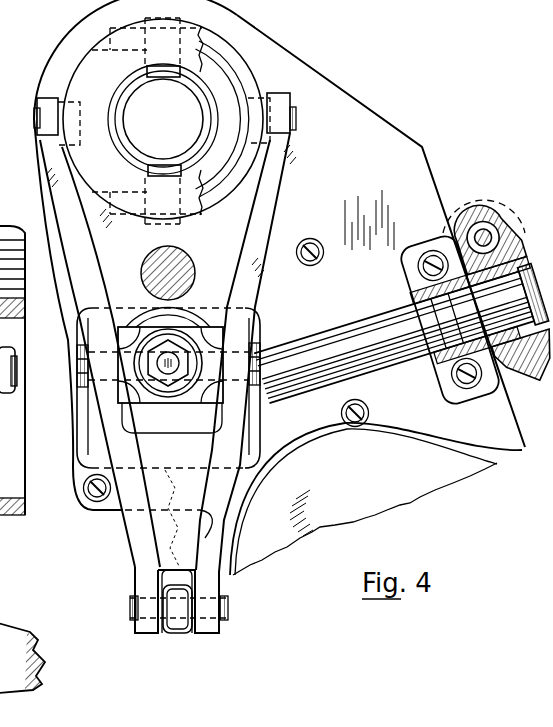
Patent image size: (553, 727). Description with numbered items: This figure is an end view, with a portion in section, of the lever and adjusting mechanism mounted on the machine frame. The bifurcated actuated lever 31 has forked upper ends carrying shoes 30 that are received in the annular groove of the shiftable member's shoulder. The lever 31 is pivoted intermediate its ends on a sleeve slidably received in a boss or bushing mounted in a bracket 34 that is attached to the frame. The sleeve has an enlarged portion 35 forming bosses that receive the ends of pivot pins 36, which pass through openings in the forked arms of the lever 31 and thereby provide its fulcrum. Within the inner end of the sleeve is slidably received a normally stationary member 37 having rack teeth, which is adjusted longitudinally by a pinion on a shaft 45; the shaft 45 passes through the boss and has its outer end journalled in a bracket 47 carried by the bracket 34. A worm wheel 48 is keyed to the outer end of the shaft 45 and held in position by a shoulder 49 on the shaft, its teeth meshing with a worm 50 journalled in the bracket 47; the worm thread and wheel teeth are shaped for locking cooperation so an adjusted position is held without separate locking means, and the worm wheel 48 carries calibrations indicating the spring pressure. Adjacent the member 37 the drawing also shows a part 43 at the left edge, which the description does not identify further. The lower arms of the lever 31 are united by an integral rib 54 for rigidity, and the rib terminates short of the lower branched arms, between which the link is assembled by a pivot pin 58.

The shoes 30 is at (258, 98).
The actuated lever 31 is at (283, 178).
The bracket 34 is at (422, 148).
The enlarged portion 35 is at (210, 327).
The pivot pins 36 is at (264, 346).
The normally stationary member 37 is at (6, 350).
The fitting 43 is at (3, 395).
The shaft 45 is at (339, 338).
The bracket 47 is at (414, 249).
The worm wheel 48 is at (522, 367).
The shoulder 49 is at (532, 288).
The worm 50 is at (498, 212).
The rib 54 is at (165, 537).
The pivot pin 58 is at (247, 599).